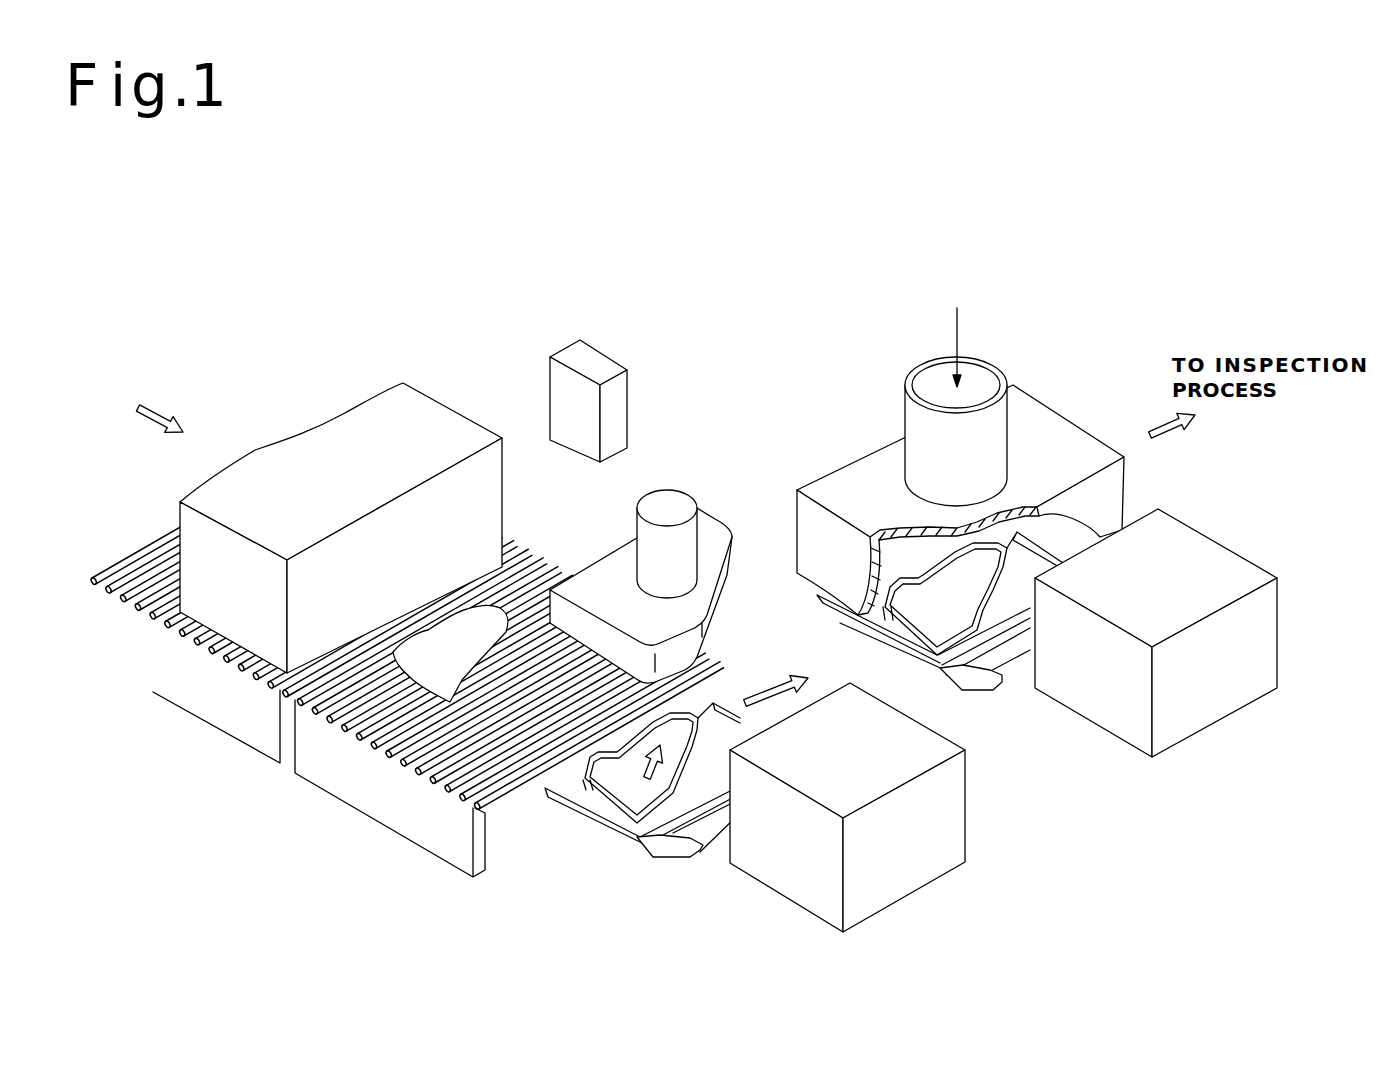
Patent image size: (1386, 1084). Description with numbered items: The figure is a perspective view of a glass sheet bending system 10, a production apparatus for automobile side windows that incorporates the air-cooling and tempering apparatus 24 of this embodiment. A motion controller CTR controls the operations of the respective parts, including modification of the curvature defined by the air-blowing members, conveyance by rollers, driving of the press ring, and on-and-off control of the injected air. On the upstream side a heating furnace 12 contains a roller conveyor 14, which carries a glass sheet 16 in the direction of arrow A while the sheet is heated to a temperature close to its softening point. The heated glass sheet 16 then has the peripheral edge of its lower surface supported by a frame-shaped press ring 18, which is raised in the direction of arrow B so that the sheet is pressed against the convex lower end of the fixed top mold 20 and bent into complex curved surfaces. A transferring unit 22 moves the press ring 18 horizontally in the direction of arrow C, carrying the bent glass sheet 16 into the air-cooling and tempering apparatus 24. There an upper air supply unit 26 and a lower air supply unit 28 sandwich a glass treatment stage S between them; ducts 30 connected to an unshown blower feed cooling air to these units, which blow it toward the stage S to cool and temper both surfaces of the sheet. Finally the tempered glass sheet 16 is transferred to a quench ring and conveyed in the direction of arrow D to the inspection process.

The glass sheet bending system 10 is at (407, 679).
The heating furnace 12 is at (428, 425).
The roller conveyor 14 is at (322, 728).
The glass sheet 16 is at (440, 648).
The press ring 18 is at (811, 706).
The top mold 20 is at (687, 612).
The transferring unit 22 is at (980, 682).
The air-cooling and tempering apparatus 24 is at (961, 467).
The upper air supply unit 26 is at (860, 480).
The lower air supply unit 28 is at (768, 653).
The duct 30 is at (997, 360).
The motion controller CTR is at (615, 423).
The glass treatment stage S is at (923, 615).
The arrow A is at (158, 406).
The arrow B is at (647, 772).
The arrow C is at (765, 699).
The arrow D is at (1162, 437).